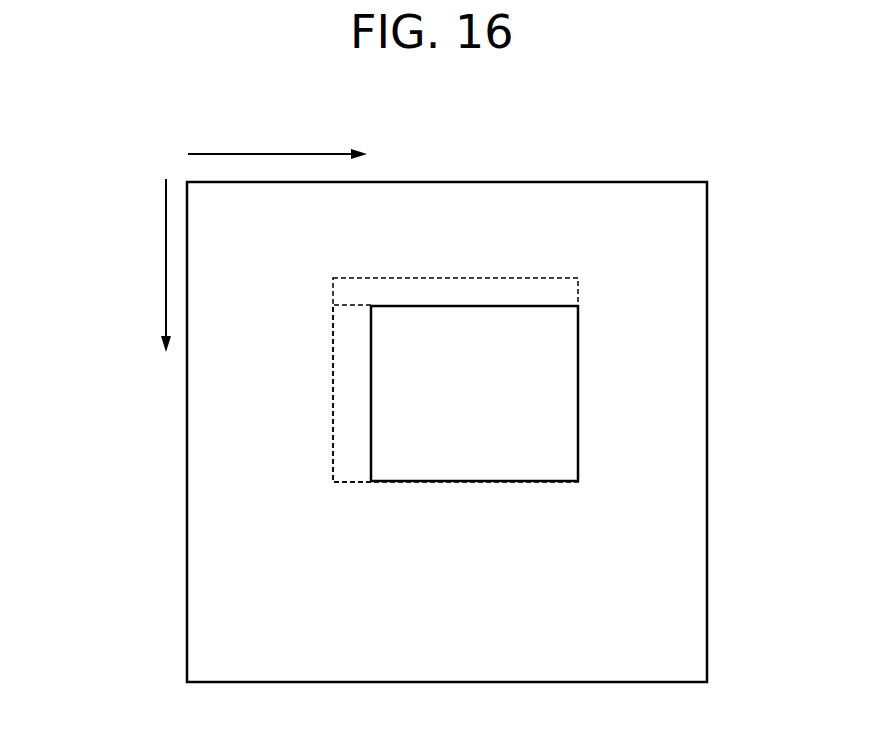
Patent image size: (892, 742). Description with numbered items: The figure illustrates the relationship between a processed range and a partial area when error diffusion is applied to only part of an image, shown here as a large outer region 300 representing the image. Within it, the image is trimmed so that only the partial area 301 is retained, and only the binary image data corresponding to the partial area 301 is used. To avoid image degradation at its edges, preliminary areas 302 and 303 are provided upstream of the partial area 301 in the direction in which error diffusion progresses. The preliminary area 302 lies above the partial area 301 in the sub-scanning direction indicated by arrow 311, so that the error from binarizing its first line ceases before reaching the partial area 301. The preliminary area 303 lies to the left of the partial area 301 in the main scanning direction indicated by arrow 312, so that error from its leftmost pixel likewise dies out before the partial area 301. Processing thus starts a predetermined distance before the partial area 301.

The display screen 300 is at (707, 230).
The partial area 301 is at (578, 358).
The preliminary area 302 is at (524, 290).
The preliminary area 303 is at (350, 466).
The arrow 311 is at (165, 262).
The arrow 312 is at (250, 154).